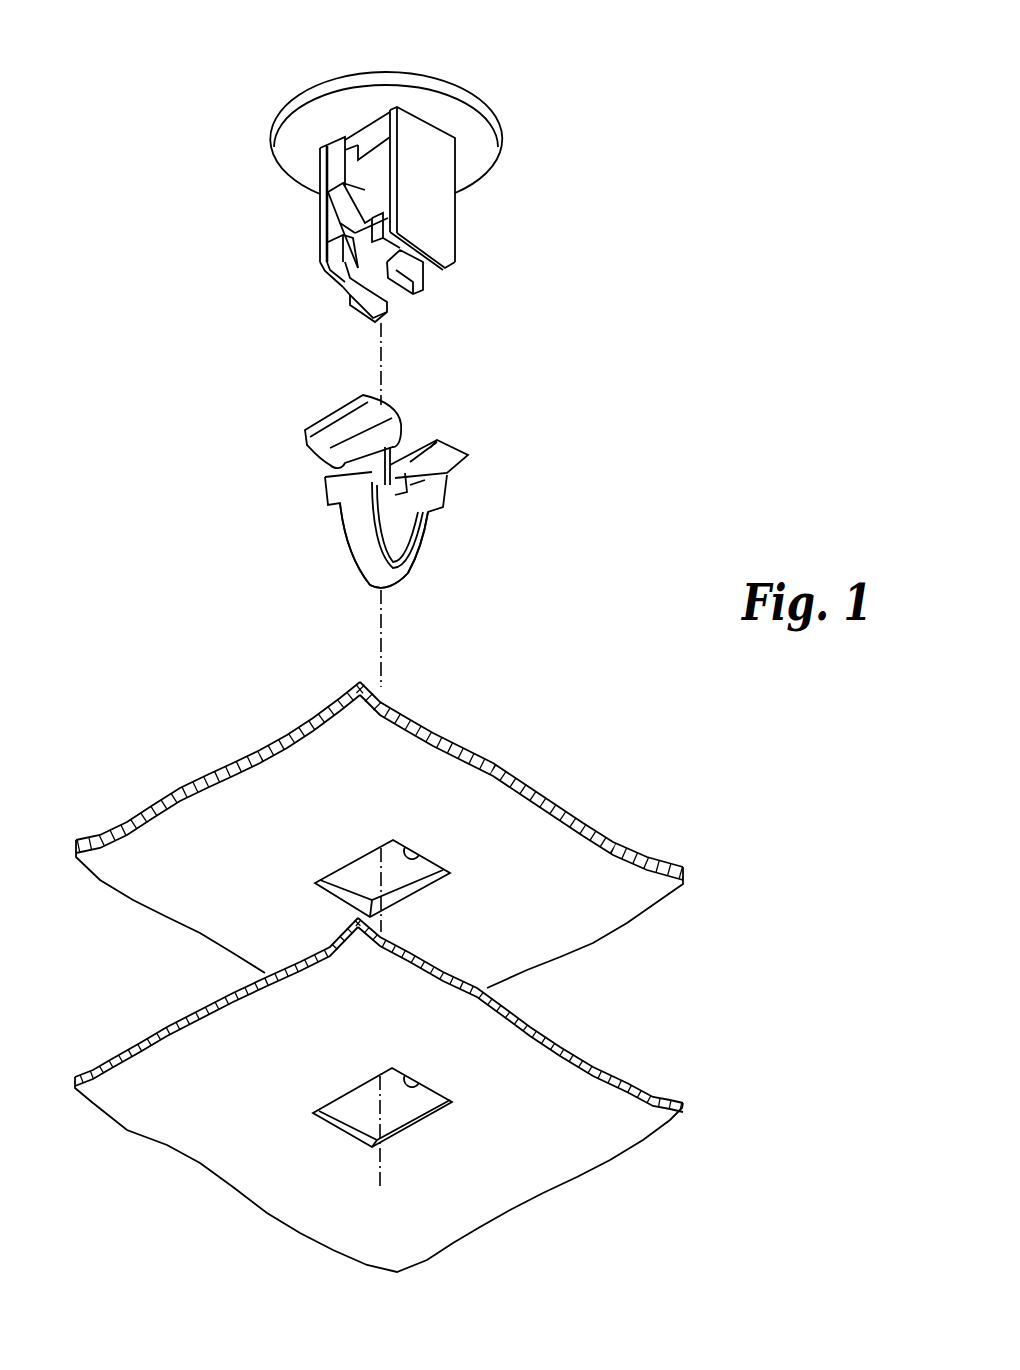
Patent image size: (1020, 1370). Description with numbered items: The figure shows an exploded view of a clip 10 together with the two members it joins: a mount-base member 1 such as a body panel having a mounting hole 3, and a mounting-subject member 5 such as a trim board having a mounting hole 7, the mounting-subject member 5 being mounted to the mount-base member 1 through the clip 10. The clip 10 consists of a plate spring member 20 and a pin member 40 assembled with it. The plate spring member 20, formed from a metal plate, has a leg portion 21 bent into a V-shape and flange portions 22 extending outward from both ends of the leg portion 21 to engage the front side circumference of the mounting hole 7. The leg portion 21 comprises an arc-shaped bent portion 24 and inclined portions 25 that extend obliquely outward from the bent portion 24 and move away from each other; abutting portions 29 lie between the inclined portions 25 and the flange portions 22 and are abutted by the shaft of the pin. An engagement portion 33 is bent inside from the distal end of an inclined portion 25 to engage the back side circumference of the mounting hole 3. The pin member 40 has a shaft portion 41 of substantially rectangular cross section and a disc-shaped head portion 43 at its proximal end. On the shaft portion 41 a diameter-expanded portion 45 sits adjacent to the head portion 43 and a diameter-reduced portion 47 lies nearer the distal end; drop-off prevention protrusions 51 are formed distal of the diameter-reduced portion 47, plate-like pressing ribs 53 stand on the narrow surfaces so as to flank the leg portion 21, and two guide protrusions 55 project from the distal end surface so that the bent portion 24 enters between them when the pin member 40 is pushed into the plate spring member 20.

The mount-base member 1 is at (590, 1148).
The mounting hole 3 is at (423, 1093).
The mounting-subject member 5 is at (487, 767).
The mounting hole 7 is at (413, 870).
The clip 10 is at (615, 298).
The plate spring member 20 is at (488, 456).
The leg portion 21 is at (341, 562).
The flange portions 22 is at (330, 443).
The bent portion 24 is at (390, 577).
The inclined portions 25 is at (363, 537).
The abutting portions 29 is at (402, 435).
The engagement portion 33 is at (413, 493).
The pin member 40 is at (474, 248).
The shaft portion 41 is at (301, 258).
The head portion 43 is at (457, 88).
The diameter-expanded portion 45 is at (335, 173).
The diameter-reduced portion 47 is at (343, 220).
The drop-off prevention protrusion 51 is at (318, 270).
The pressing ribs 53 is at (445, 225).
The guide protrusions 55 is at (373, 298).